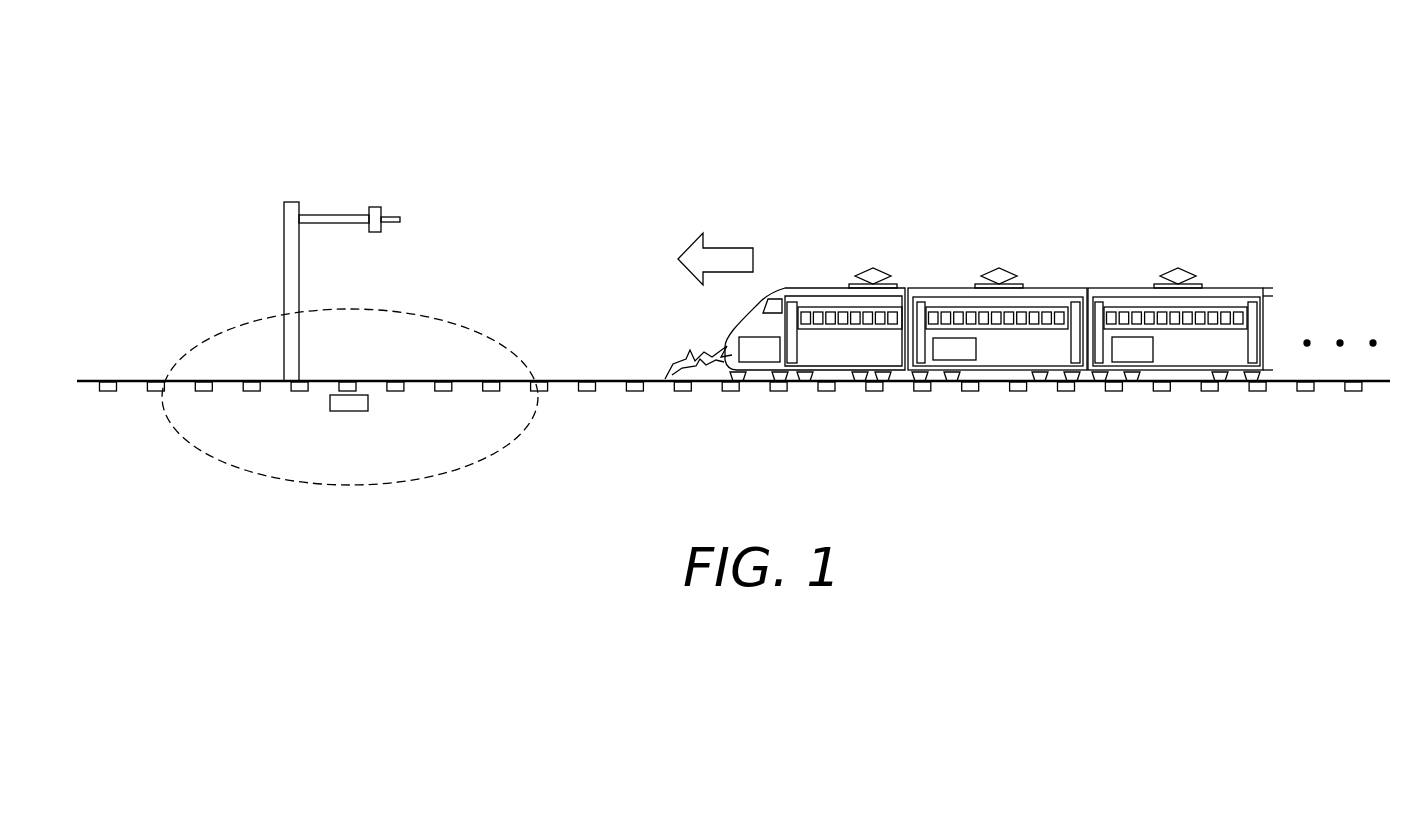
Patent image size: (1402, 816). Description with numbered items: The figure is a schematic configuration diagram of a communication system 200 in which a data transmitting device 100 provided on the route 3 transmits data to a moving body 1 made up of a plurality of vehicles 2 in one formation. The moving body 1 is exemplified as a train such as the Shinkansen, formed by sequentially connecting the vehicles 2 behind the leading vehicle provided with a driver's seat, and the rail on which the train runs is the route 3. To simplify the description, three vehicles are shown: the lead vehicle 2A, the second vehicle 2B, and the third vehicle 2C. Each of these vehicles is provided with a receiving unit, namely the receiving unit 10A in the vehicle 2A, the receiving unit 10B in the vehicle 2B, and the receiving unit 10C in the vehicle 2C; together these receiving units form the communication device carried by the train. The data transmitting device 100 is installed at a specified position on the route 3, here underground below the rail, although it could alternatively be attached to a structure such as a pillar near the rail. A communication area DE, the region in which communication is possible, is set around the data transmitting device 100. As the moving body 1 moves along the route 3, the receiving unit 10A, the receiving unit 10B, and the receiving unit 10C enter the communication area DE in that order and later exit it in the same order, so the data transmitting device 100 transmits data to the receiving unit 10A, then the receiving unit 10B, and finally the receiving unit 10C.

The moving body 1 is at (1292, 260).
The vehicle 2 is at (986, 355).
The lead vehicle 2A is at (822, 308).
The second vehicle 2B is at (1044, 308).
The third vehicle 2C is at (1230, 308).
The route 3 is at (560, 380).
The receiving unit of lead vehicle 10A is at (761, 352).
The receiving unit of second vehicle 10B is at (948, 360).
The receiving unit of third vehicle 10C is at (1135, 358).
The data transmitting device 100 is at (315, 405).
The communication system 200 is at (252, 138).
The communication area DE is at (230, 333).